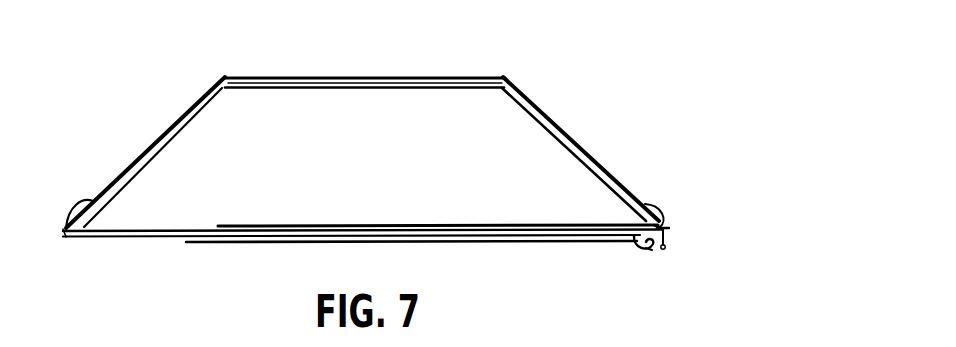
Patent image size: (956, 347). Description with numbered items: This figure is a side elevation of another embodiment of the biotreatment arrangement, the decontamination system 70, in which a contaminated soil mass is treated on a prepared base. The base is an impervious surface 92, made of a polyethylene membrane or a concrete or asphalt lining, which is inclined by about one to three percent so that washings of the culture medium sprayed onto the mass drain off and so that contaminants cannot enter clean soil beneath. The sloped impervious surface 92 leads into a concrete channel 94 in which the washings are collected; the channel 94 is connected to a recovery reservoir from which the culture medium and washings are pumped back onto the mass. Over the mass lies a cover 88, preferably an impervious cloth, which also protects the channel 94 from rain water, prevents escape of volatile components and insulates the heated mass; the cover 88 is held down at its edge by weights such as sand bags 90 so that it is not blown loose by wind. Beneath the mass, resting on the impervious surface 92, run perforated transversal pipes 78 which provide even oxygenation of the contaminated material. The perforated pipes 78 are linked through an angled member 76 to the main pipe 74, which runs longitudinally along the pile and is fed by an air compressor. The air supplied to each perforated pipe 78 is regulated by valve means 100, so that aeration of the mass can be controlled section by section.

The decontamination system 70 is at (579, 88).
The main pipe 74 is at (666, 251).
The angled member 76 is at (666, 232).
The perforated transversal pipes 78 is at (573, 227).
The cover 88 is at (618, 178).
The sand bags 90 is at (82, 203).
The impervious surface 92 is at (490, 245).
The concrete channel 94 is at (645, 252).
The valve means 100 is at (648, 254).